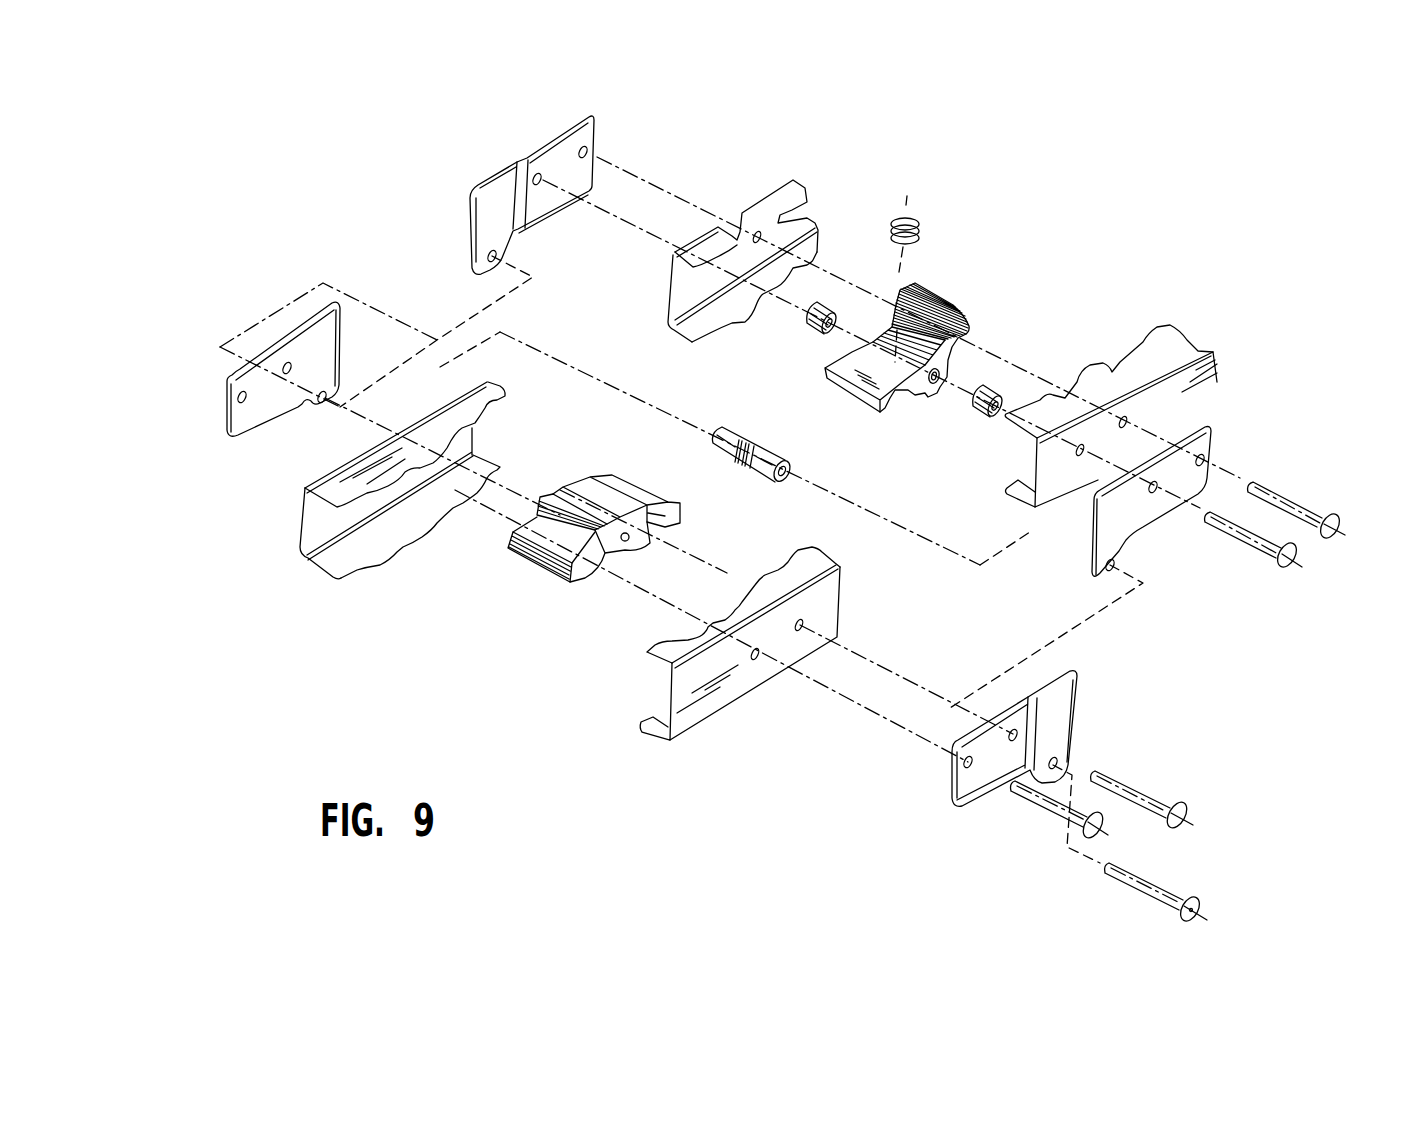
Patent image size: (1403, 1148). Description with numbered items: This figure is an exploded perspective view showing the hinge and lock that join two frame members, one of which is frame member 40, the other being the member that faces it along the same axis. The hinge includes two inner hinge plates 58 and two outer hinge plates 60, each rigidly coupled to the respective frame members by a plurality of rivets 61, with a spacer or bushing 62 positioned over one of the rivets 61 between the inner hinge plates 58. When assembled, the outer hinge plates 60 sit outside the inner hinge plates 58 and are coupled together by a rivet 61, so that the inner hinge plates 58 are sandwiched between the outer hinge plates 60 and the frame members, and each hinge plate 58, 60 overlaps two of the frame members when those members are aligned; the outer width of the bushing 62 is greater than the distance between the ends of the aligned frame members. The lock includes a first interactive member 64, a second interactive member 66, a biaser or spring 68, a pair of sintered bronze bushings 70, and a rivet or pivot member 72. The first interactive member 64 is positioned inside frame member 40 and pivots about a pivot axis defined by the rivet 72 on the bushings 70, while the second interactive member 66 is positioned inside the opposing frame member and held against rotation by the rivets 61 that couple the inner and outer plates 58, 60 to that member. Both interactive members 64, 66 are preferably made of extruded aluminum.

The frame member 40 is at (1222, 343).
The inner hinge plate 58 is at (243, 420).
The outer hinge plate 60 is at (507, 187).
The rivet 61 is at (1296, 490).
The bushing 62 is at (801, 468).
The first interactive member 64 is at (962, 287).
The second interactive member 66 is at (537, 586).
The spring 68 is at (928, 211).
The sintered bronze bushing 70 is at (812, 336).
The pivot member 72 is at (1265, 556).